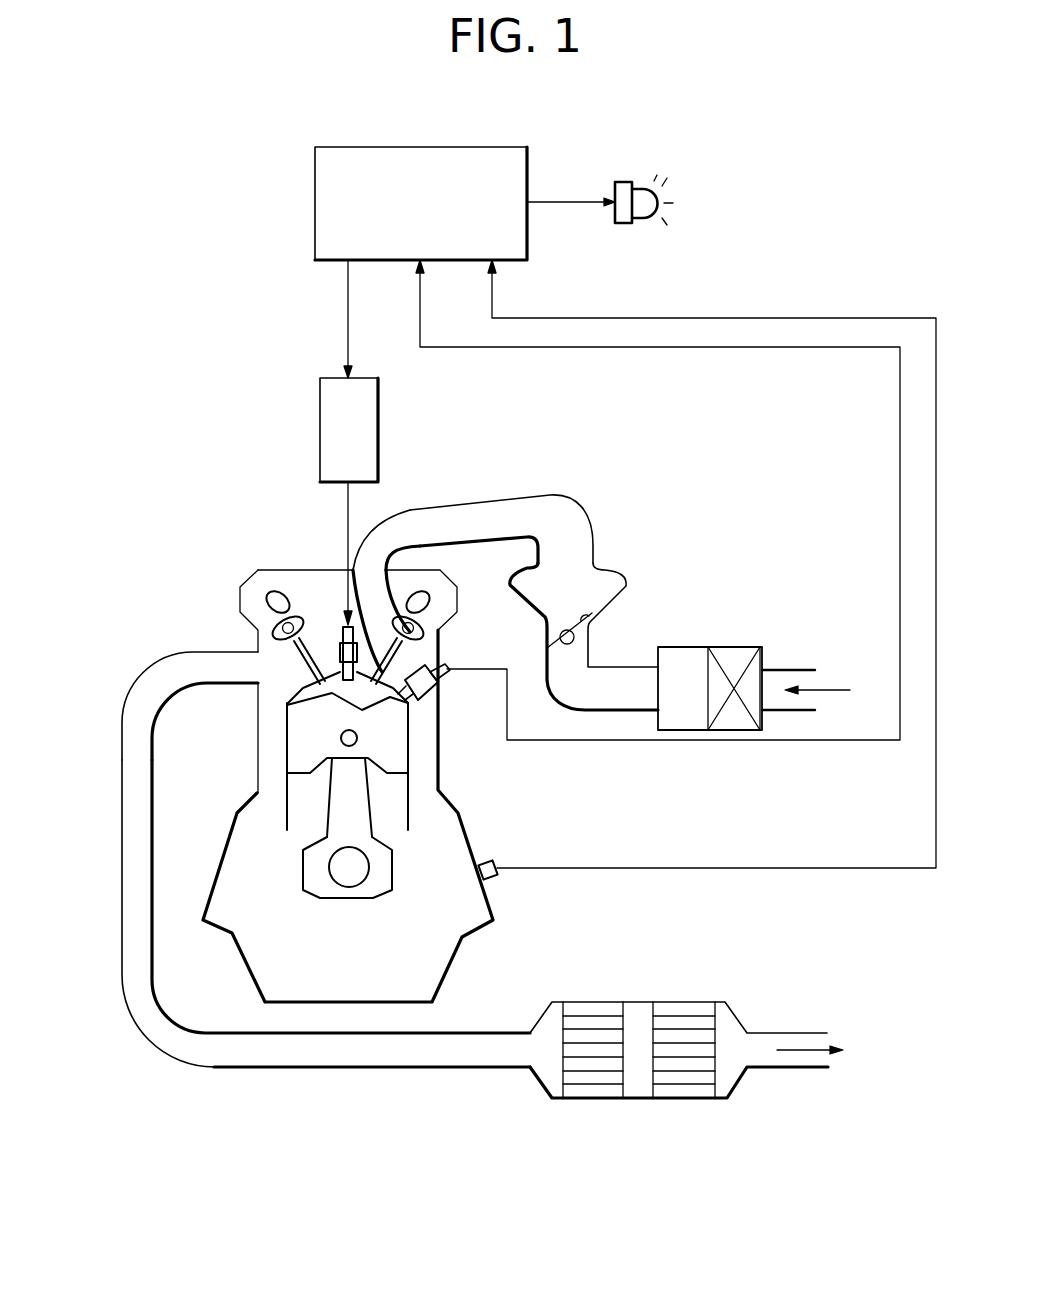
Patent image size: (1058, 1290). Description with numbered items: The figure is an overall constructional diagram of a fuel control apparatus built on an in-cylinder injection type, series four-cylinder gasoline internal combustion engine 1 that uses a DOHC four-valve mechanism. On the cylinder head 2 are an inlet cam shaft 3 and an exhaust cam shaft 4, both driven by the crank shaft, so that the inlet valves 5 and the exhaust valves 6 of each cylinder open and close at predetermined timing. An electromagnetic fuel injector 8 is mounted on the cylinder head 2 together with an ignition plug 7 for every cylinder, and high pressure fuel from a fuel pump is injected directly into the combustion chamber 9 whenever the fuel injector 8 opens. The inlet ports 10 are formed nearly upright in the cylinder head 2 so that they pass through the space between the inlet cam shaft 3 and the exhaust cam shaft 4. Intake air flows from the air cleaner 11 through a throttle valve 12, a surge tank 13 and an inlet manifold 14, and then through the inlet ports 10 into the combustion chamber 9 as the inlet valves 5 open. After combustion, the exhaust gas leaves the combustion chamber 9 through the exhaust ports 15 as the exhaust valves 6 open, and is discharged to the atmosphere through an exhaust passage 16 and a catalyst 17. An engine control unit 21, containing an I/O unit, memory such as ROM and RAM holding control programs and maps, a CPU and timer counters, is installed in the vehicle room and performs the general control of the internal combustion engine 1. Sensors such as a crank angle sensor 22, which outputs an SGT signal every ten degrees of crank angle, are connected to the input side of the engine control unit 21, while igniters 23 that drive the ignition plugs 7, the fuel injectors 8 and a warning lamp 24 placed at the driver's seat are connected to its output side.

The internal combustion engine 1 is at (166, 582).
The cylinder head 2 is at (288, 570).
The inlet cam shaft 3 is at (428, 602).
The exhaust cam shaft 4 is at (268, 594).
The inlet valve 5 is at (413, 727).
The exhaust valve 6 is at (305, 713).
The ignition plug 7 is at (340, 665).
The fuel injector 8 is at (437, 696).
The combustion chamber 9 is at (361, 706).
The inlet port 10 is at (373, 568).
The air cleaner 11 is at (737, 657).
The throttle valve 12 is at (597, 613).
The surge tank 13 is at (613, 568).
The inlet manifold 14 is at (490, 497).
The exhaust port 15 is at (265, 656).
The exhaust passage 16 is at (133, 818).
The catalyst 17 is at (637, 1010).
The engine control unit 21 is at (349, 146).
The crank angle sensor 22 is at (496, 862).
The igniter 23 is at (328, 393).
The warning lamp 24 is at (642, 192).